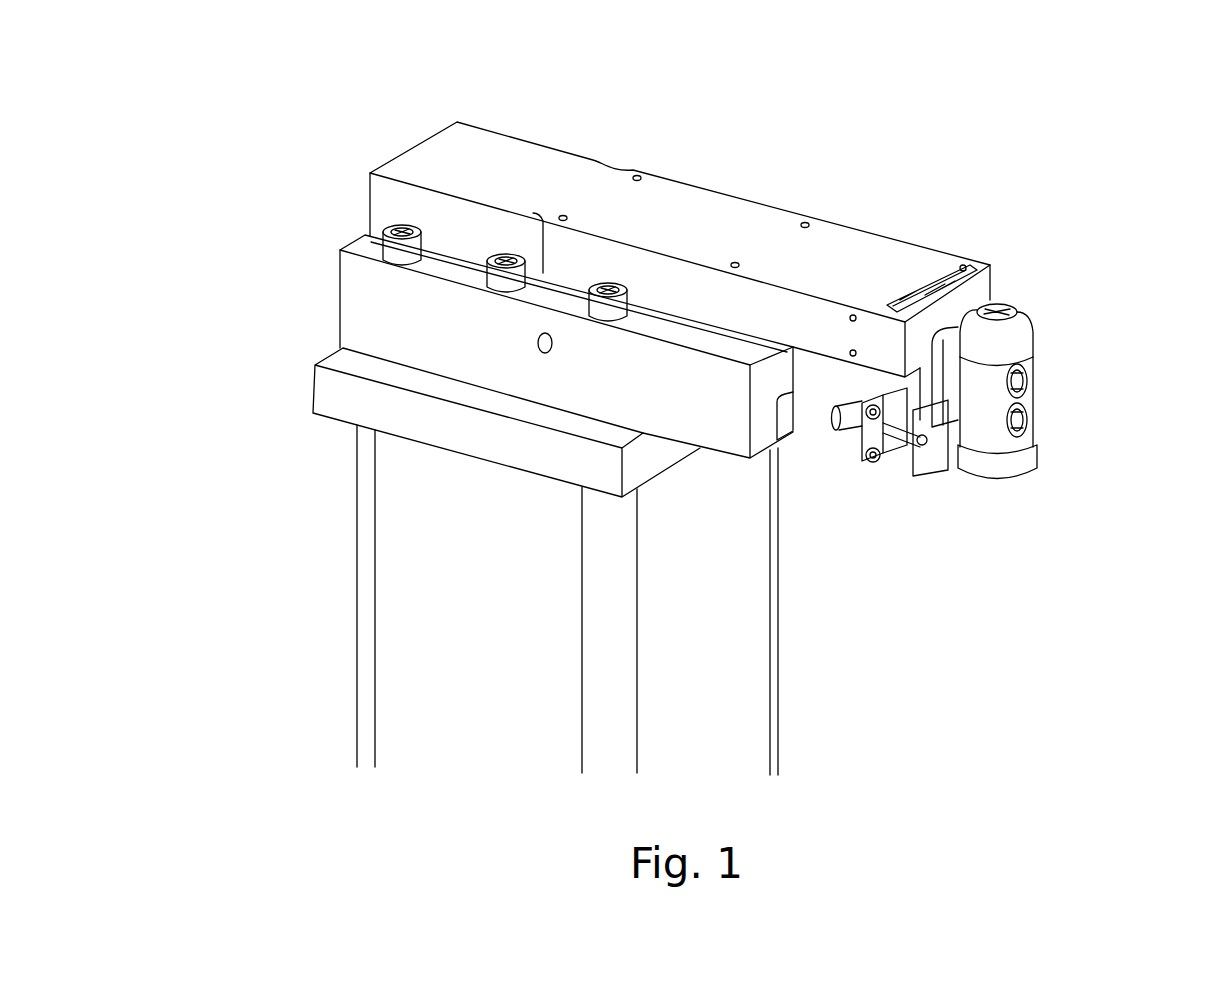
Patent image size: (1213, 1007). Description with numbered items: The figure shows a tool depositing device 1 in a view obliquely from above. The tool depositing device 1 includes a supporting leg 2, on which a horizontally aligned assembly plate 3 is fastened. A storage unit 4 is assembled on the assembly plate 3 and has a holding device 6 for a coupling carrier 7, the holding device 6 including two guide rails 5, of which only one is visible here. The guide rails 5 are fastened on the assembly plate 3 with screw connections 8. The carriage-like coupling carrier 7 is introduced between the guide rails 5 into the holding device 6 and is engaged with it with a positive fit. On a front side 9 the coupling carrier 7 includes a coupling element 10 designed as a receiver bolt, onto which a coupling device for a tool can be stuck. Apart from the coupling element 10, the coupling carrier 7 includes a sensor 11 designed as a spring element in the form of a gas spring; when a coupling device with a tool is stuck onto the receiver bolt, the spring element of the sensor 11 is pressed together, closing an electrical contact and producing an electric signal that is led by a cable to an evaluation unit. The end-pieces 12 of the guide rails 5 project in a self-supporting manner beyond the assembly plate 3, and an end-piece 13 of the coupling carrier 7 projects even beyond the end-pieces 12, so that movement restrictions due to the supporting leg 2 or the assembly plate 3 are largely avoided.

The tool depositing device 1 is at (236, 636).
The supporting leg 2 is at (718, 687).
The assembly plate 3 is at (347, 403).
The storage unit 4 is at (765, 160).
The guide rails 5 is at (368, 325).
The holding device 6 is at (314, 314).
The coupling carrier 7 is at (448, 158).
The screw connections 8 is at (397, 243).
The front side 9 is at (993, 303).
The coupling element 10 is at (995, 400).
The sensor 11 is at (897, 433).
The end-pieces 12 is at (695, 417).
The end-piece 13 is at (810, 417).